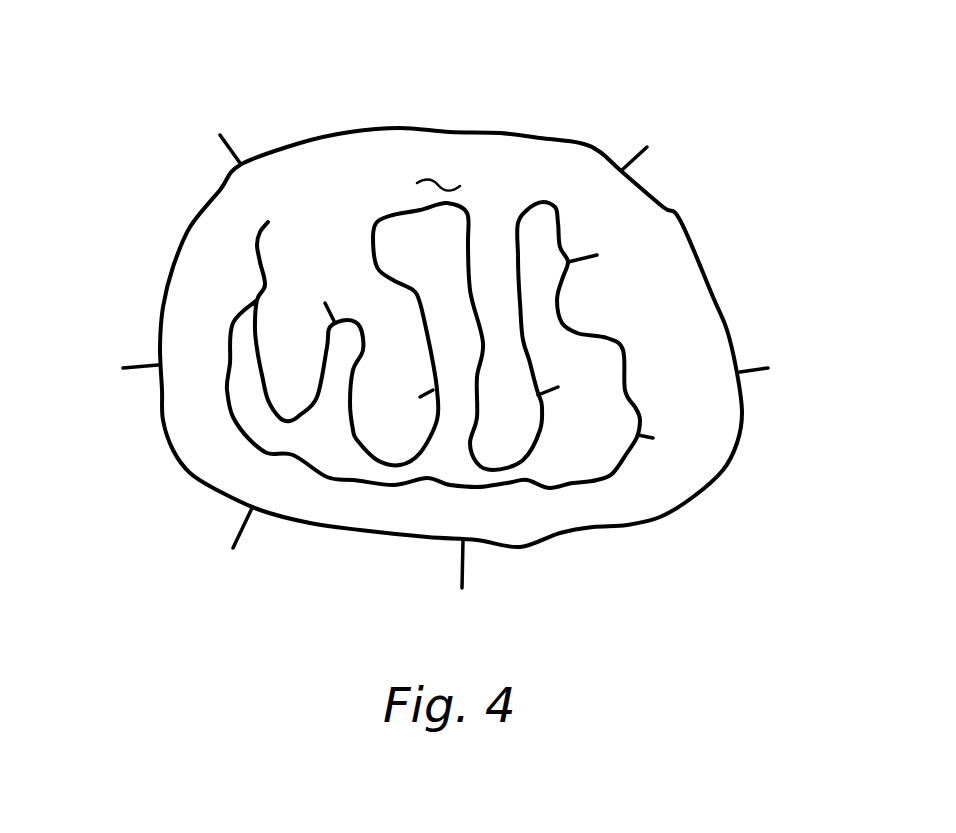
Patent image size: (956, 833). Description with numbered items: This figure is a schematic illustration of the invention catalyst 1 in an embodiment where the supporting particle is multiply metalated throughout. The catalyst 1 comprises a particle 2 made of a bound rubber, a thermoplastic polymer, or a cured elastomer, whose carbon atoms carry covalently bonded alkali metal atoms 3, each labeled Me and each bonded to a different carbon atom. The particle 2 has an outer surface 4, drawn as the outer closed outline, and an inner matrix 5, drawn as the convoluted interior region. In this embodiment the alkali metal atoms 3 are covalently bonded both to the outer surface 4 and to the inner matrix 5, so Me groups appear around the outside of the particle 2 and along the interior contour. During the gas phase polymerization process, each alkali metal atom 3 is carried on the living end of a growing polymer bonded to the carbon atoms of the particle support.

The catalyst 1 is at (134, 172).
The particle 2 is at (728, 286).
The alkali metal atom 3 is at (707, 113).
The outer surface 4 is at (347, 118).
The inner matrix 5 is at (588, 494).